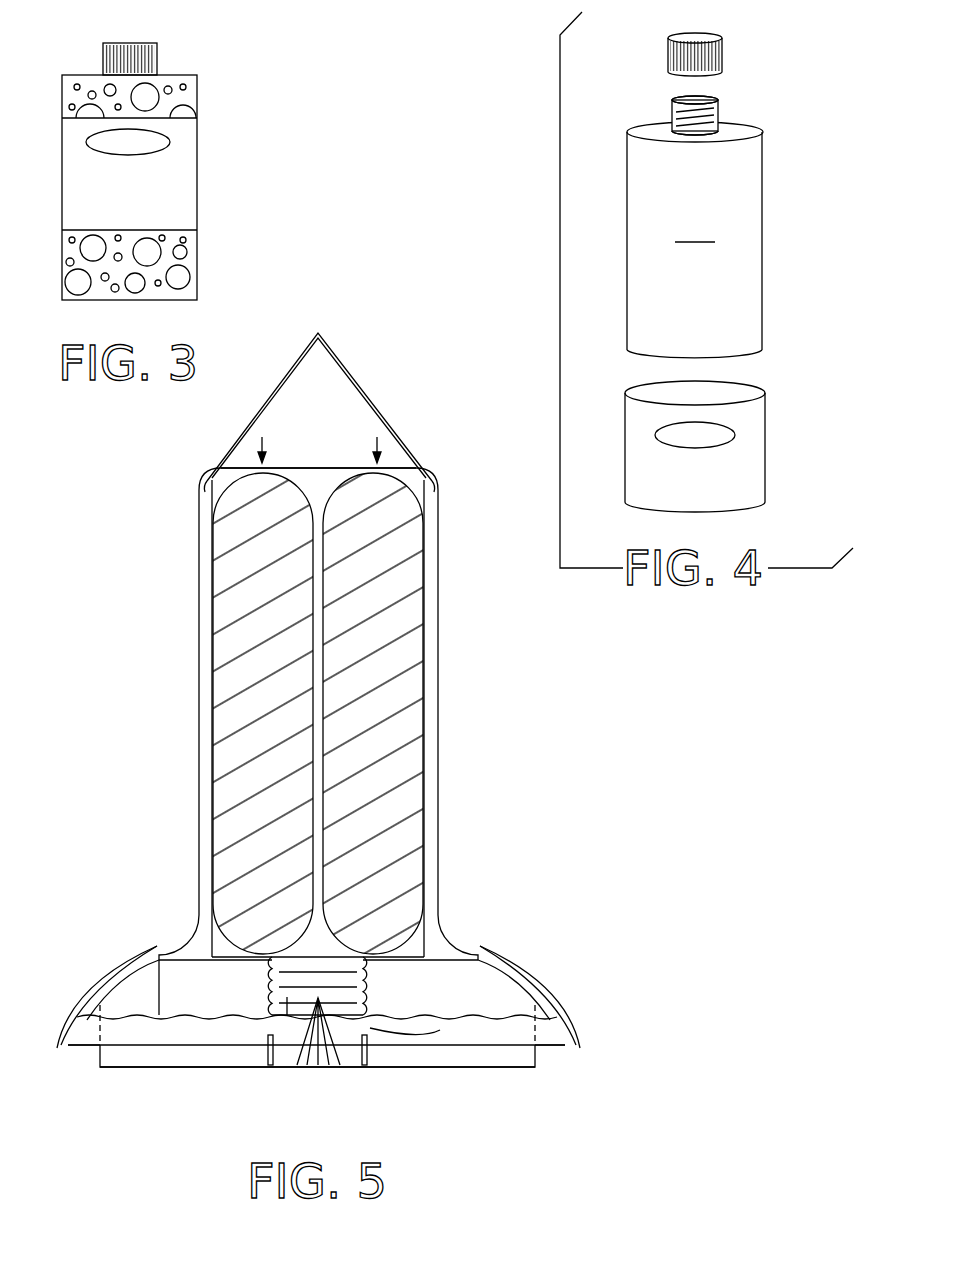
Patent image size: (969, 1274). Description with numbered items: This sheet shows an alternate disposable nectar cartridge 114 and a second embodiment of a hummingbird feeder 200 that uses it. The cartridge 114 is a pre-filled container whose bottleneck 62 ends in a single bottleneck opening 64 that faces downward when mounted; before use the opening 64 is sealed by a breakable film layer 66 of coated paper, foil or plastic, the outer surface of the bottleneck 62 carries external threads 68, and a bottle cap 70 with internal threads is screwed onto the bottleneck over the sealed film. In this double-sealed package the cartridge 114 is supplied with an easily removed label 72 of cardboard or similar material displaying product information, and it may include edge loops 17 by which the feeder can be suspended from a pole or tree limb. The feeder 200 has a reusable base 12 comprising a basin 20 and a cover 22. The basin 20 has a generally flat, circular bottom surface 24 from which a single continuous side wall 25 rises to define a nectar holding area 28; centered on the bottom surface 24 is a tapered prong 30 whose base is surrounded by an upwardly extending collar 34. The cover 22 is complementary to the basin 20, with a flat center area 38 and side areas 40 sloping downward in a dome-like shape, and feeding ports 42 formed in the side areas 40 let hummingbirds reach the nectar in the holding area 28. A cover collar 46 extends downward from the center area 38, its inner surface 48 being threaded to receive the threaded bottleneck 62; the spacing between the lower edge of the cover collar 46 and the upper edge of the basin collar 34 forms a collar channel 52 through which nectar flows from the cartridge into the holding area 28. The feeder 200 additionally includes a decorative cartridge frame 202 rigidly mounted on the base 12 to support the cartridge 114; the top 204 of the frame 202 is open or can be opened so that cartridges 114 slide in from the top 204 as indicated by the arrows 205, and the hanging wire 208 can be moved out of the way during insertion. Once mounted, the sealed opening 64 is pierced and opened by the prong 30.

In FIG. 5, the base 12 is at (547, 1040).
In FIG. 5, the edge loops 17 is at (207, 480).
In FIG. 5, the basin 20 is at (122, 1062).
In FIG. 5, the cover 22 is at (493, 975).
In FIG. 5, the bottom surface 24 is at (462, 1067).
In FIG. 5, the side wall 25 is at (95, 1055).
In FIG. 5, the nectar holding area 28 is at (170, 1020).
In FIG. 5, the prong 30 is at (322, 1060).
In FIG. 5, the collar 34 is at (265, 1053).
In FIG. 5, the center area 38 is at (190, 960).
In FIG. 5, the side areas 40 is at (78, 1035).
In FIG. 5, the feeding ports 42 is at (88, 987).
In FIG. 5, the cover collar 46 is at (372, 990).
In FIG. 5, the inner surface 48 is at (268, 1000).
In FIG. 5, the collar channel 52 is at (365, 1023).
In FIG. 4, the bottleneck 62 is at (668, 107).
In FIG. 5, the bottleneck 62 is at (287, 997).
In FIG. 4, the bottleneck opening 64 is at (672, 100).
In FIG. 4, the film layer 66 is at (703, 99).
In FIG. 4, the external threads 68 is at (717, 128).
In FIG. 5, the external threads 68 is at (270, 972).
In FIG. 3, the bottle cap 70 is at (157, 61).
In FIG. 4, the bottle cap 70 is at (712, 53).
In FIG. 3, the label 72 is at (190, 155).
In FIG. 4, the label 72 is at (748, 434).
In FIG. 3, the cartridge 114 is at (197, 95).
In FIG. 4, the cartridge 114 is at (745, 168).
In FIG. 5, the cartridge 114 is at (397, 627).
In FIG. 5, the hummingbird feeder 200 is at (160, 646).
In FIG. 5, the cartridge frame 202 is at (433, 668).
In FIG. 5, the top 204 is at (392, 468).
In FIG. 5, the arrows 205 is at (377, 437).
In FIG. 5, the hanging wire 208 is at (353, 368).